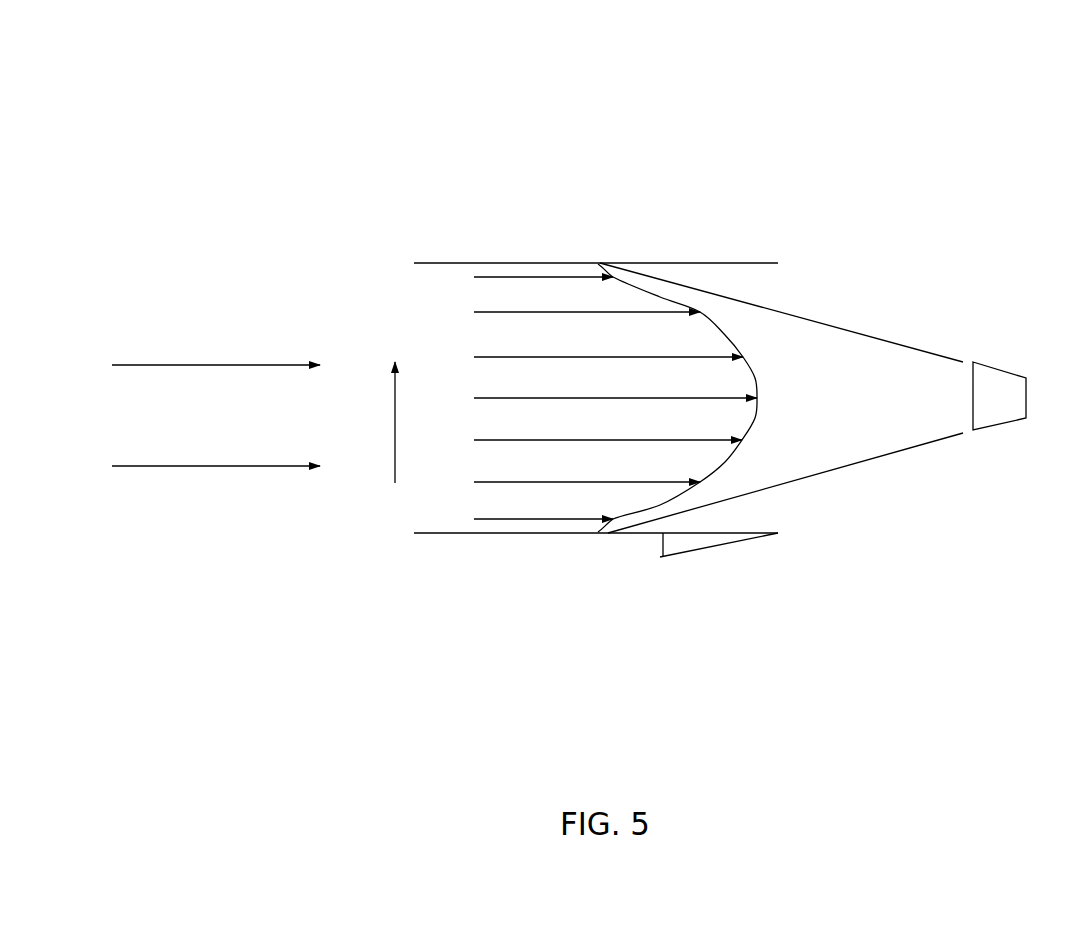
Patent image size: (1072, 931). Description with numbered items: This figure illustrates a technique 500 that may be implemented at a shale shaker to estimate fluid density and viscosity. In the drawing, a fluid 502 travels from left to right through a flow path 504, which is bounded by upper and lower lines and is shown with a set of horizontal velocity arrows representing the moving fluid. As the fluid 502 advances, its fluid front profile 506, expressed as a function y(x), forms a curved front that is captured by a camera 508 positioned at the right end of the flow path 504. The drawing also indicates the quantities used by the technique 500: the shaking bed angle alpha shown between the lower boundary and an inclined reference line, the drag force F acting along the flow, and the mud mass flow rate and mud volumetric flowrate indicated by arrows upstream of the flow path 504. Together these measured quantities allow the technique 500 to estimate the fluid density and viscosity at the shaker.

The technique 500 is at (300, 94).
The fluid 502 is at (458, 425).
The flow path 504 is at (703, 263).
The fluid front profile 506 is at (756, 366).
The camera 508 is at (997, 431).